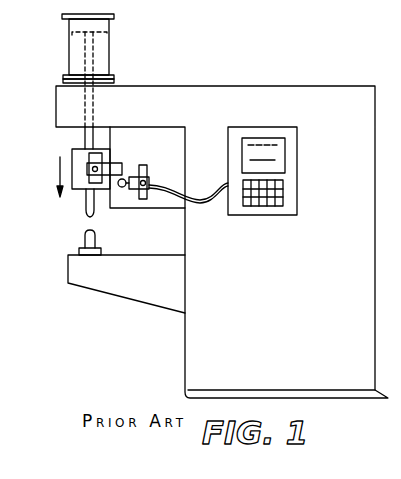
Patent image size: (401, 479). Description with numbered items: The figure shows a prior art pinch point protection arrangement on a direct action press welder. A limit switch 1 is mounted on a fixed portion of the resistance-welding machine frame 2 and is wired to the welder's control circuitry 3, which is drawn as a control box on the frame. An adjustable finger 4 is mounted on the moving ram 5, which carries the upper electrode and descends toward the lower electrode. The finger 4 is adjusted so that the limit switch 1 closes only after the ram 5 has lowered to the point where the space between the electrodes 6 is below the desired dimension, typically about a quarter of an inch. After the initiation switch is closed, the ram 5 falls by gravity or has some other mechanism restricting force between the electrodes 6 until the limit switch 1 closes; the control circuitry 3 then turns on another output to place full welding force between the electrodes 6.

The limit switch 1 is at (136, 177).
The resistance-welding machine frame 2 is at (152, 180).
The control circuitry 3 is at (267, 127).
The adjustable finger 4 is at (121, 163).
The moving ram 5 is at (72, 149).
The electrodes 6 is at (84, 232).